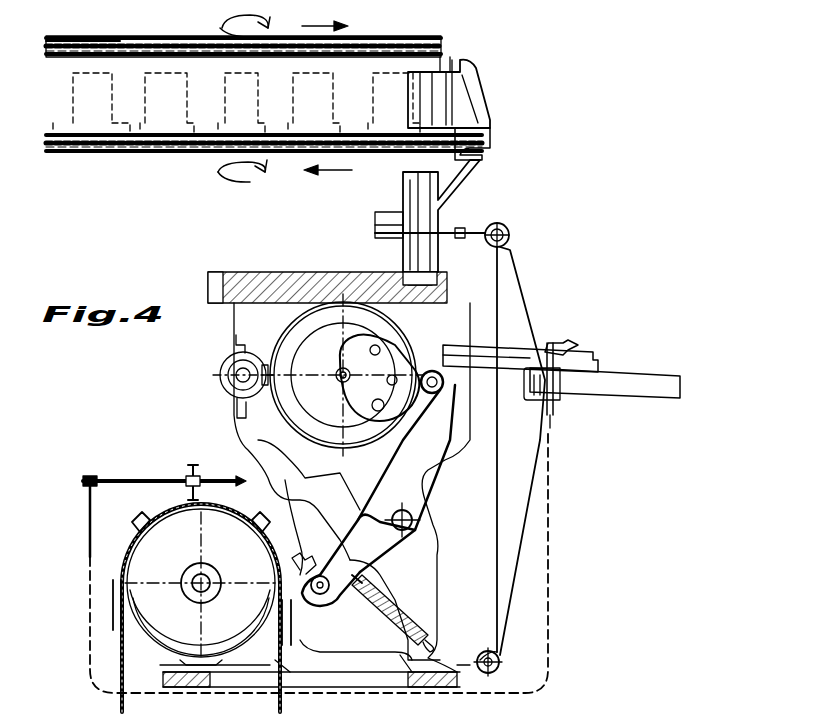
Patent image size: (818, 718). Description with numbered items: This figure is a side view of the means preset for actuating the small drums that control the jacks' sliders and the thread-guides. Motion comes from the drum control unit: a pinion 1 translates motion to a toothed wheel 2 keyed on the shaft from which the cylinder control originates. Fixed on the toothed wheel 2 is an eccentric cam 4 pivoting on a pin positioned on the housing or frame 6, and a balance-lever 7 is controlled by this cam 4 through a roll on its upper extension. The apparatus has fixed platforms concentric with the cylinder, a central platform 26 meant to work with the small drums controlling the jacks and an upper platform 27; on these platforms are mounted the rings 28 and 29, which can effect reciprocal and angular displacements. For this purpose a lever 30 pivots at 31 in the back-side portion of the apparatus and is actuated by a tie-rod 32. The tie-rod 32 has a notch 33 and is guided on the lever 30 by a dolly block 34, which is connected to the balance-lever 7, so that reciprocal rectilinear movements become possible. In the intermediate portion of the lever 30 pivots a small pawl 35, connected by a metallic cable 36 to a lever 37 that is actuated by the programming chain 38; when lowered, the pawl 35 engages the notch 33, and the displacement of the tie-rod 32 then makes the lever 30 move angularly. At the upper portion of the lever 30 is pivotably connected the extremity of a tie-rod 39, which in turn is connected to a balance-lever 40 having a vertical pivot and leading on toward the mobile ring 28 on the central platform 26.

The pinion 1 is at (228, 372).
The toothed wheel 2 is at (318, 300).
The eccentric cam 4 is at (390, 355).
The housing or frame 6 is at (412, 520).
The balance-lever 7 is at (432, 478).
The central platform 26 is at (121, 155).
The upper platform 27 is at (190, 36).
The ring 28 is at (64, 155).
The ring 29 is at (63, 58).
The lever 30 is at (543, 462).
The pivot 31 is at (507, 690).
The tie-rod 32 is at (660, 400).
The notch 33 is at (595, 365).
The dolly block 34 is at (560, 415).
The small pawl 35 is at (571, 339).
The metallic cable 36 is at (552, 552).
The lever 37 is at (155, 478).
The programming chain 38 is at (110, 656).
The tie-rod 39 is at (500, 226).
The balance-lever 40 is at (391, 214).